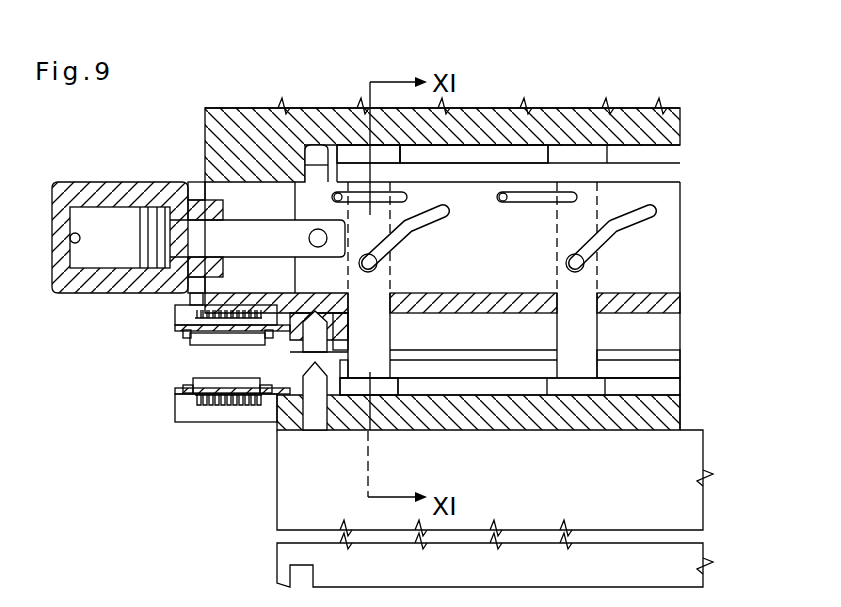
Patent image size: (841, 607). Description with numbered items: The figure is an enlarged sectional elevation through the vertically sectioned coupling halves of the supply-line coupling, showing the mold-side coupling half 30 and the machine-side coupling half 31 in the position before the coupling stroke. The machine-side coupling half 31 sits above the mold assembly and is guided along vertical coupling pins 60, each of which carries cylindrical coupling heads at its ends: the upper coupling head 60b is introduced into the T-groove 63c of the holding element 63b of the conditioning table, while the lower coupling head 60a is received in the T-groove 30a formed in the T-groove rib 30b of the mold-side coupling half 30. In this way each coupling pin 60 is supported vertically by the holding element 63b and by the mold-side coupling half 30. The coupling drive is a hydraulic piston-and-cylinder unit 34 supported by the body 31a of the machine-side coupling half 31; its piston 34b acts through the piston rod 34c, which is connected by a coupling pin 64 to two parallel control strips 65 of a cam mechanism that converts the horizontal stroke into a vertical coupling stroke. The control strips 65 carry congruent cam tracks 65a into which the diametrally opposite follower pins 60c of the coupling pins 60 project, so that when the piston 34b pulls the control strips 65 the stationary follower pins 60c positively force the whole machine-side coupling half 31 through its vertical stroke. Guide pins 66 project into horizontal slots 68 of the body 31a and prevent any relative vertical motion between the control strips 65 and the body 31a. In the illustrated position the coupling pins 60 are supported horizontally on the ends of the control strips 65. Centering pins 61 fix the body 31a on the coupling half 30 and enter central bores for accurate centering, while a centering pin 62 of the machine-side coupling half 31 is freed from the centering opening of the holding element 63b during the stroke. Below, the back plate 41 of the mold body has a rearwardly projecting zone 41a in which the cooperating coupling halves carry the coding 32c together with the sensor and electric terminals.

The mold-side coupling half 30 is at (694, 412).
The T-groove 30a is at (522, 431).
The T-groove rib 30b is at (658, 385).
The machine-side coupling half 31 is at (692, 259).
The body of the machine-side coupling half 31a is at (642, 302).
The coding 32c is at (217, 382).
The piston-and-cylinder unit 34 is at (70, 173).
The piston 34b is at (150, 250).
The piston rod 34c is at (237, 235).
The back plate 41 is at (268, 559).
The rearwardly projecting zone of the back plate 41a is at (660, 502).
The coupling pins 60 is at (608, 331).
The lower coupling head 60a is at (370, 431).
The upper coupling head 60b is at (373, 157).
The follower pins 60c is at (360, 266).
The centering pins 61 is at (300, 432).
The centering pin 62 is at (310, 165).
The holding element 63b is at (318, 97).
The T-groove 63c is at (500, 157).
The coupling pin 64 is at (318, 229).
The control strips 65 is at (512, 243).
The cam tracks 65a is at (403, 233).
The guide pins 66 is at (507, 195).
The horizontal slots 68 is at (548, 195).